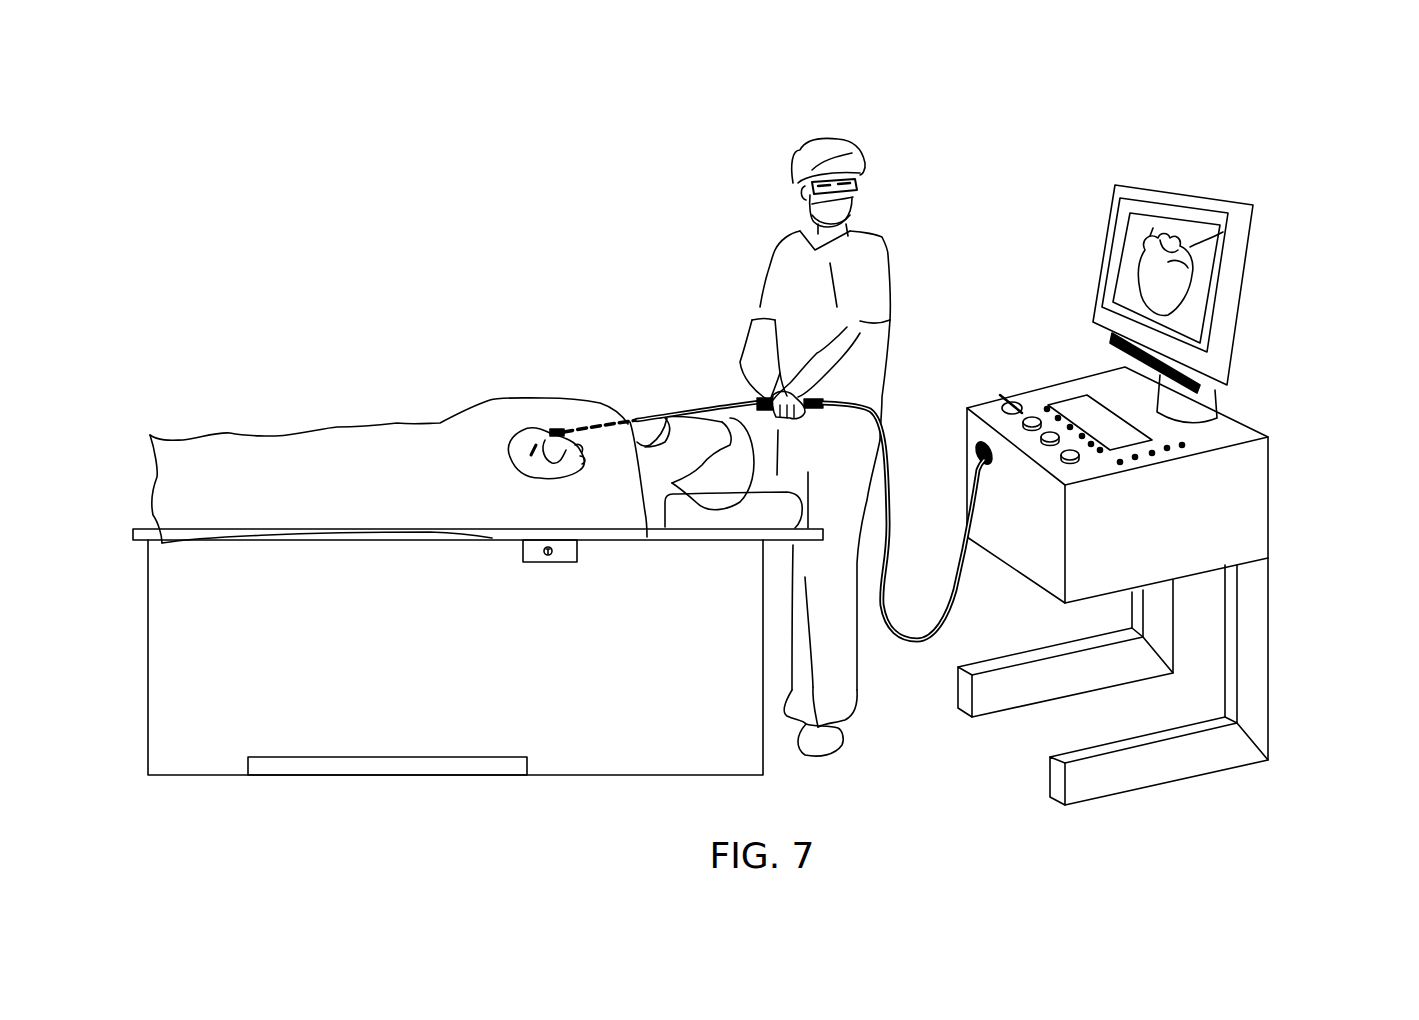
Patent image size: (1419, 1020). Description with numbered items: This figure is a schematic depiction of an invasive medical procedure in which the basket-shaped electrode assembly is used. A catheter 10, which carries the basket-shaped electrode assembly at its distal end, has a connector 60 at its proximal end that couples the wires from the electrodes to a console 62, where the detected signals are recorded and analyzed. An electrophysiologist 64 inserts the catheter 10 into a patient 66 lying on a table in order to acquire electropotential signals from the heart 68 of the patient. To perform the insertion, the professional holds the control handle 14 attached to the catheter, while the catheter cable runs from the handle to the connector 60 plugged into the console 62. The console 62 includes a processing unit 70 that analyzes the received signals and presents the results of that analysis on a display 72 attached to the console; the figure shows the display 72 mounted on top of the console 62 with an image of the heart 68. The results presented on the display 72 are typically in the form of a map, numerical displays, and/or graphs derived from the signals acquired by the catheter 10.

The catheter 10 is at (655, 413).
The control handle 14 is at (862, 392).
The connector 60 is at (969, 407).
The console 62 is at (1275, 484).
The electrophysiologist 64 is at (830, 148).
The patient 66 is at (246, 455).
The heart 68 is at (522, 430).
The processing unit 70 is at (1315, 538).
The display 72 is at (1252, 265).